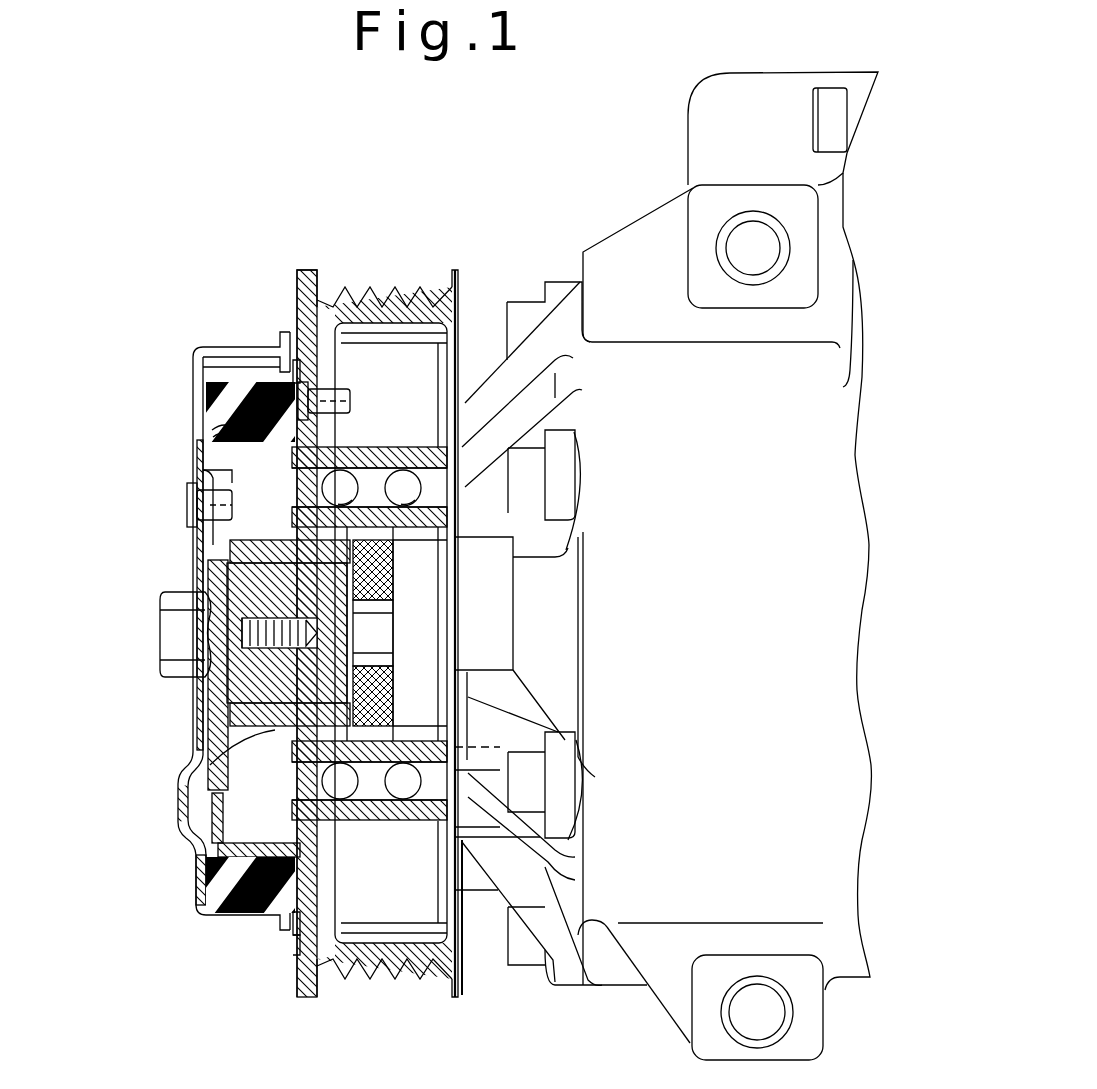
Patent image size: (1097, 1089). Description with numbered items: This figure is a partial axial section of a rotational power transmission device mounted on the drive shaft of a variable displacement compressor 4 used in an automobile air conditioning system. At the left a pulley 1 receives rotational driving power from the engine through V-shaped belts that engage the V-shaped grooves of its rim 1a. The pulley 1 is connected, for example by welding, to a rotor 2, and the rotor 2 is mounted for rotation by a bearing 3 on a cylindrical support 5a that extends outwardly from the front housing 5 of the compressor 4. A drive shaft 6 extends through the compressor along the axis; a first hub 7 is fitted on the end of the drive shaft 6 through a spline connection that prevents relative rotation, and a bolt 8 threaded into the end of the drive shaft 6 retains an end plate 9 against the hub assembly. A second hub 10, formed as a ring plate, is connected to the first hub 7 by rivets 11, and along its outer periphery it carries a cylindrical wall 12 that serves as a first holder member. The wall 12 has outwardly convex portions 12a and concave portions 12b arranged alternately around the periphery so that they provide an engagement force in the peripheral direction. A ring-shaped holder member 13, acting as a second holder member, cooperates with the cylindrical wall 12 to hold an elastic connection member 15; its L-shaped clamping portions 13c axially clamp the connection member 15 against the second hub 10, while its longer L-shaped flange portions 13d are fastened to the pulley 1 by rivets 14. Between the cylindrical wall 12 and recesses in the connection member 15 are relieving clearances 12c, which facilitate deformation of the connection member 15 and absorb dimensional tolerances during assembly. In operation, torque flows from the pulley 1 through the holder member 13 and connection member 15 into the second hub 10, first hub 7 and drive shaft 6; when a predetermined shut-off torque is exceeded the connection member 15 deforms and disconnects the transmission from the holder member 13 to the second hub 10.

The pulley 1 is at (377, 586).
The rim 1a is at (382, 283).
The rotor 2 is at (463, 350).
The bearing 3 is at (403, 490).
The compressor 4 is at (649, 201).
The front housing 5 is at (650, 380).
The cylindrical support 5a is at (390, 535).
The drive shaft 6 is at (230, 597).
The first hub 7 is at (220, 720).
The bolt 8 is at (173, 633).
The end plate 9 is at (203, 703).
The second hub 10 is at (203, 473).
The rivets 11 is at (187, 502).
The cylindrical wall 12 is at (196, 627).
The outwardly convex portions 12a is at (238, 343).
The concave portions 12b is at (223, 370).
The relieving clearances 12c is at (193, 903).
The holder member 13 is at (236, 647).
The clamping portions 13c is at (298, 940).
The flange portions 13d is at (297, 377).
The rivets 14 is at (345, 395).
The elastic connection member 15 is at (220, 407).